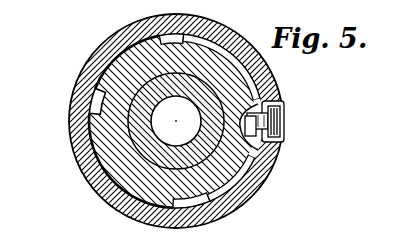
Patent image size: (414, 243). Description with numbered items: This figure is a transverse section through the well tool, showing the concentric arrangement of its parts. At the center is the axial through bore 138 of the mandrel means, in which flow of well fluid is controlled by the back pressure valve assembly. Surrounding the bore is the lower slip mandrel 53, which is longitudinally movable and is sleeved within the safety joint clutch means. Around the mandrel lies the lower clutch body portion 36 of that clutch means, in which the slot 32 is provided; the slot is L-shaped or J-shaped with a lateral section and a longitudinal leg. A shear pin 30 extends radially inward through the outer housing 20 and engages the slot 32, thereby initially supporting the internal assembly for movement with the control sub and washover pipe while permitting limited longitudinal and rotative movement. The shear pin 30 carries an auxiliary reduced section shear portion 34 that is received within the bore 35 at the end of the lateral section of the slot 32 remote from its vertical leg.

The axial through bore 138 is at (104, 96).
The housing 20 is at (78, 109).
The lower slip mandrel 53 is at (140, 128).
The auxiliary reduced section shear portion 34 is at (262, 104).
The shear pin 30 is at (270, 122).
The slot 32 is at (253, 140).
The bore 35 is at (250, 150).
The lower clutch body portion 36 is at (208, 197).